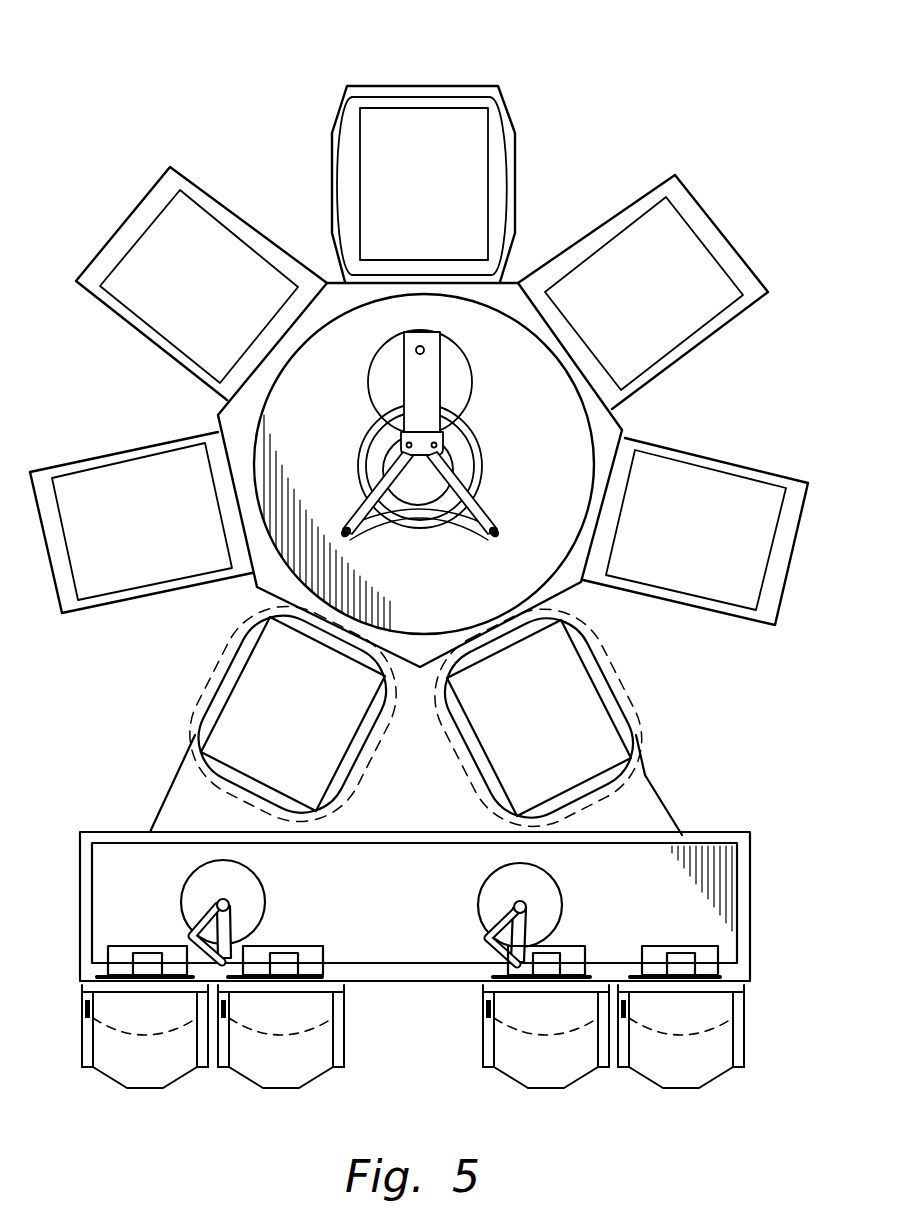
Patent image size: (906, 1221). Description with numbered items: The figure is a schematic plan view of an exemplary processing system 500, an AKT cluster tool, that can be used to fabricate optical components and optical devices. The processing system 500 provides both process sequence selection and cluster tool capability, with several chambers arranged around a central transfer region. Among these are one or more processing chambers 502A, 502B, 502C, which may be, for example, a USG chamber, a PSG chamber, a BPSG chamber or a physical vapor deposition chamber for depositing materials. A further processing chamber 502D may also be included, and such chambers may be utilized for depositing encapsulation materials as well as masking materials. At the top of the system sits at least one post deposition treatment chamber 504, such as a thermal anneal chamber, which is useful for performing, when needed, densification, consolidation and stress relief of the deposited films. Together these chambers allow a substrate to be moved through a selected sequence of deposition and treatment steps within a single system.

The processing system 500 is at (178, 100).
The post deposition treatment chamber 504 is at (432, 85).
The processing chamber 502A is at (716, 225).
The processing chamber 502B is at (718, 461).
The processing chamber 502C is at (123, 451).
The processing chamber 502D is at (130, 214).